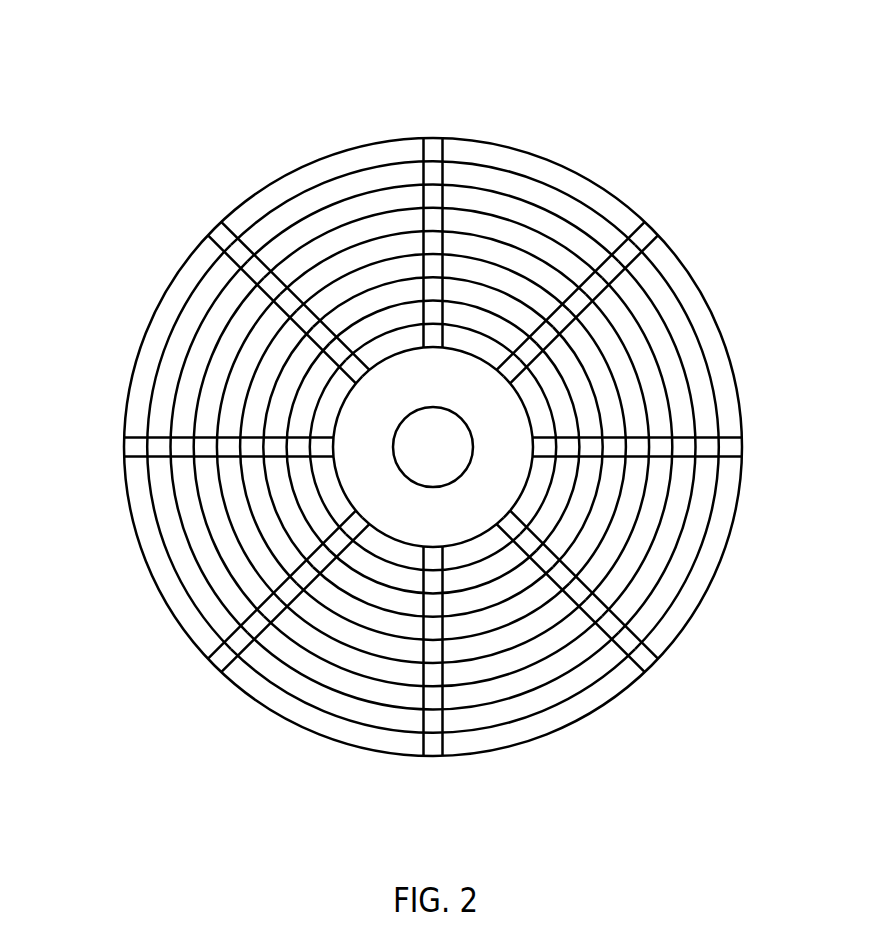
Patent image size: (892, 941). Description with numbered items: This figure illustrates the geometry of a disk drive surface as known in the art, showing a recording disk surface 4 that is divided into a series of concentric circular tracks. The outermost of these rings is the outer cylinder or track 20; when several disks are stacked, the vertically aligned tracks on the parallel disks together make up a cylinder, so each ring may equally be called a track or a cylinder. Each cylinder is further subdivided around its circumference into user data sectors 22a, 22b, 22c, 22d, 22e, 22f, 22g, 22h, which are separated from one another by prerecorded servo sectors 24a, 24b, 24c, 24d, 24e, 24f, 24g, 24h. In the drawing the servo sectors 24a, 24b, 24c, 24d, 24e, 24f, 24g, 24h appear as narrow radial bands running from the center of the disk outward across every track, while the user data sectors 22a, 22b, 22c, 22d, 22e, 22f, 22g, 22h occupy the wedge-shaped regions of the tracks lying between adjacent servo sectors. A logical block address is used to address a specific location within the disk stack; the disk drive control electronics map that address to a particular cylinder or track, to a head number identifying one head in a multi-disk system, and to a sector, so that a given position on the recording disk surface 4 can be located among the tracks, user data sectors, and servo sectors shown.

The recording disk surface 4 is at (230, 113).
The outer cylinder or track 20 is at (492, 152).
The user data sector 22a is at (582, 185).
The user data sector 22b is at (710, 330).
The user data sector 22c is at (713, 553).
The user data sector 22d is at (560, 718).
The user data sector 22e is at (303, 718).
The user data sector 22f is at (150, 553).
The user data sector 22g is at (150, 330).
The user data sector 22h is at (318, 172).
The prerecorded servo sector 24a is at (432, 150).
The prerecorded servo sector 24b is at (645, 226).
The prerecorded servo sector 24c is at (735, 447).
The prerecorded servo sector 24d is at (645, 662).
The prerecorded servo sector 24e is at (433, 752).
The prerecorded servo sector 24f is at (218, 662).
The prerecorded servo sector 24g is at (125, 447).
The prerecorded servo sector 24h is at (218, 236).